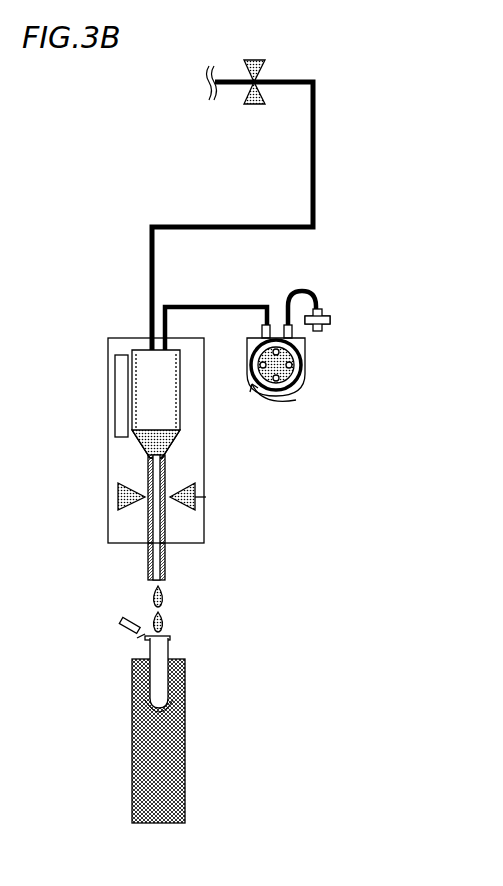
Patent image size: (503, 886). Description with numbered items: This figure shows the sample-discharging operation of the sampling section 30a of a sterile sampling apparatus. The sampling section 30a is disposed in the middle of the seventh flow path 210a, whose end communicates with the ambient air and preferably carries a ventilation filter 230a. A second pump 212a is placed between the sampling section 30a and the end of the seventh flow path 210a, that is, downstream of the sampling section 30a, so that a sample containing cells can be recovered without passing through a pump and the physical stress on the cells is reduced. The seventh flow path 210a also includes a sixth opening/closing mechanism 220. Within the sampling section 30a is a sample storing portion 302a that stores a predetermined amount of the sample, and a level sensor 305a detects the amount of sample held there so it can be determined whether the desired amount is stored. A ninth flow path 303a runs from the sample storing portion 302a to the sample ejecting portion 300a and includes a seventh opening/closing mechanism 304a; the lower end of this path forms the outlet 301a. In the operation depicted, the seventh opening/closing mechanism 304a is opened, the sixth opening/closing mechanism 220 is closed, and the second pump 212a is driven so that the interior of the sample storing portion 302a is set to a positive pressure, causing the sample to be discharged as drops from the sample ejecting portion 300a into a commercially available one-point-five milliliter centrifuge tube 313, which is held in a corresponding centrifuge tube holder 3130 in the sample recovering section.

The sampling section 30a is at (116, 320).
The seventh flow path 210a is at (316, 100).
The sixth opening/closing mechanism 220 is at (247, 101).
The ventilation filter 230a is at (331, 320).
The second pump 212a is at (305, 363).
The level sensor 305a is at (115, 395).
The sample storing portion 302a is at (170, 425).
The ninth flow path 303a is at (148, 470).
The seventh opening/closing mechanism 304a is at (204, 497).
The discharge outlet 301a is at (145, 545).
The sample ejecting portion 300a is at (150, 590).
The 1.5 mL centrifuge tube 313 is at (140, 641).
The 1.5 mL centrifuge tube holder 3130 is at (133, 700).